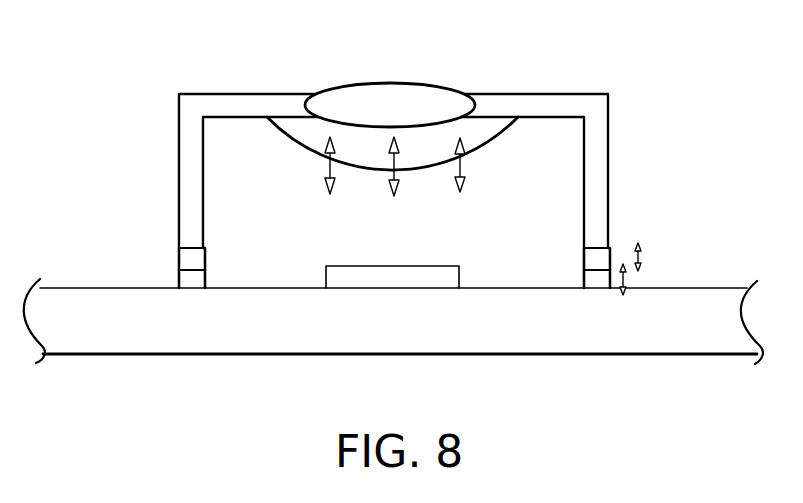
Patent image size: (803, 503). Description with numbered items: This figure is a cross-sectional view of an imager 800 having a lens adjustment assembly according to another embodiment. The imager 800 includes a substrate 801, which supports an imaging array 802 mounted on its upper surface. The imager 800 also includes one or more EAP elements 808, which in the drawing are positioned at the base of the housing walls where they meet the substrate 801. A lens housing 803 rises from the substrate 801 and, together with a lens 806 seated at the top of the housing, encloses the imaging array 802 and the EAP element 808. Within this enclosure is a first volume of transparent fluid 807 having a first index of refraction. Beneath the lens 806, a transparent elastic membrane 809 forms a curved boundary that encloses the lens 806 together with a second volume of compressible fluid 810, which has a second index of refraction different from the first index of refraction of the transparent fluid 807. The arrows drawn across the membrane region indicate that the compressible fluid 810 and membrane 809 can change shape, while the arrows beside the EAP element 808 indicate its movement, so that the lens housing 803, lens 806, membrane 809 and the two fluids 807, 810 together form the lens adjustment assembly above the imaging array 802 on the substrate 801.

The imager 800 is at (91, 81).
The substrate 801 is at (708, 337).
The imaging array 802 is at (359, 280).
The lens housing 803 is at (190, 172).
The lens 806 is at (410, 114).
The first volume of transparent fluid 807 is at (258, 173).
The EAP element 808 is at (590, 257).
The transparent elastic membrane 809 is at (505, 143).
The second volume of compressible fluid 810 is at (445, 156).